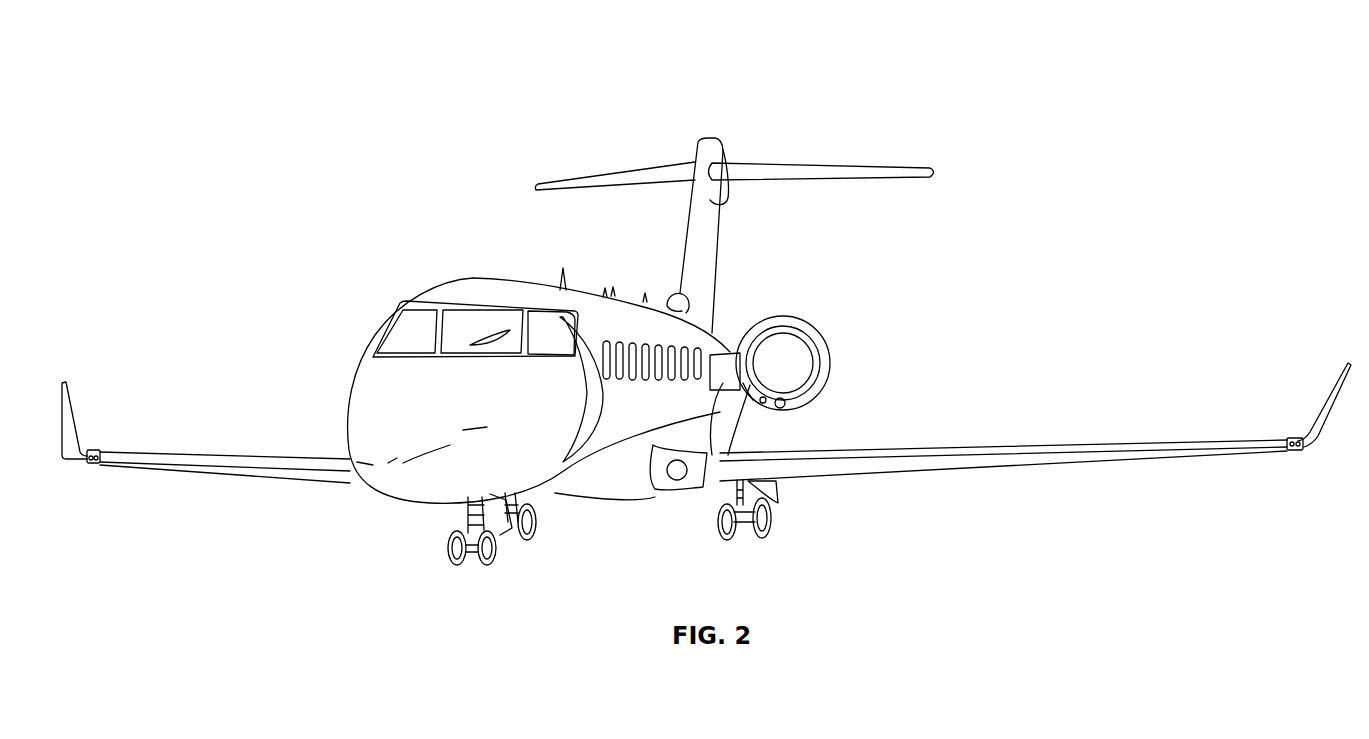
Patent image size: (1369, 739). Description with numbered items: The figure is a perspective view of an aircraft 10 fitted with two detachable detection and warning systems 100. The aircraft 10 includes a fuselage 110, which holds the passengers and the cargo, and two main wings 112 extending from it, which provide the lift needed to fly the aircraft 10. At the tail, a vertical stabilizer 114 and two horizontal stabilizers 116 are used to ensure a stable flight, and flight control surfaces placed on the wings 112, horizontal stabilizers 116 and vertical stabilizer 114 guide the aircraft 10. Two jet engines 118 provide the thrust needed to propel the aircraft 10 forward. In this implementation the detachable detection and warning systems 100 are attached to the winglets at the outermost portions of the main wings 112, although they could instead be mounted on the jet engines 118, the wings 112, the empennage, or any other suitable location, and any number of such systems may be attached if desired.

The aircraft 10 is at (162, 138).
The detachable detection and warning system 100 is at (93, 463).
The fuselage 110 is at (477, 276).
The main wing 112 is at (188, 460).
The vertical stabilizer 114 is at (703, 257).
The horizontal stabilizer 116 is at (617, 172).
The jet engine 118 is at (713, 457).